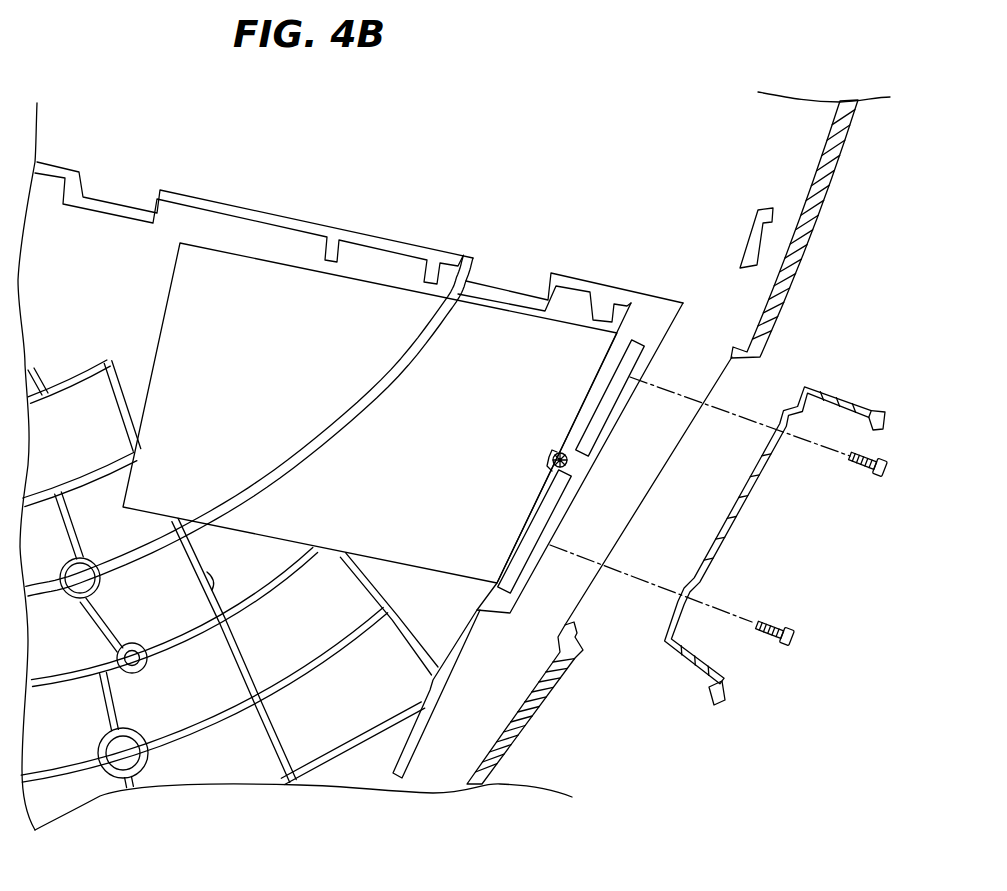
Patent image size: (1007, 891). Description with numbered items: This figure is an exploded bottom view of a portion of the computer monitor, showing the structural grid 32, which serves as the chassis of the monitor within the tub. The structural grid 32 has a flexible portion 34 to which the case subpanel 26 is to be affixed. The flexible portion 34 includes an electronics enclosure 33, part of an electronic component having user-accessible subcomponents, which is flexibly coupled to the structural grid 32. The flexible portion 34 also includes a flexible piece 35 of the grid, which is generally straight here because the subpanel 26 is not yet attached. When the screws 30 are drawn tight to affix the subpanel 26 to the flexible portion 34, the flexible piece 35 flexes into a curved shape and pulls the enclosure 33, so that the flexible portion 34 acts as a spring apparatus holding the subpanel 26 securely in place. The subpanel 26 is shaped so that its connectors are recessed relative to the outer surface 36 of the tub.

The case subpanel 26 is at (727, 690).
The screws 30 is at (773, 625).
The structural grid 32 is at (310, 680).
The electronics enclosure 33 is at (281, 351).
The flexible portion 34 is at (631, 387).
The flexible piece 35 is at (572, 465).
The outer surface 36 is at (807, 247).